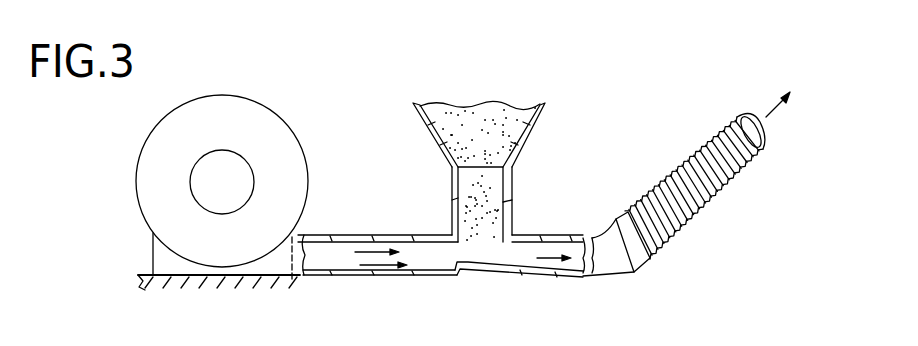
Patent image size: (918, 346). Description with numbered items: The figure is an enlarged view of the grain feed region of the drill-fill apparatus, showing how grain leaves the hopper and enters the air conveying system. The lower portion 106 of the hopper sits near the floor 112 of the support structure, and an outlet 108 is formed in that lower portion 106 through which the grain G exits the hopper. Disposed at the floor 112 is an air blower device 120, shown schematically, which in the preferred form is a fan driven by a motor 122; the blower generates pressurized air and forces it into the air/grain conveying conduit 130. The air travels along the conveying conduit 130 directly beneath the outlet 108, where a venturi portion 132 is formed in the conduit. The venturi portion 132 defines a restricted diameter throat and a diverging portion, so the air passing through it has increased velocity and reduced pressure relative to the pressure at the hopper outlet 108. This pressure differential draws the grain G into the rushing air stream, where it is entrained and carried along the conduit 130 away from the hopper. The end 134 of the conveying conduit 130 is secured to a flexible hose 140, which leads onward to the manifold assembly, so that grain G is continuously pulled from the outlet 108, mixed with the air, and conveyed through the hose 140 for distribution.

The lower portion 106 is at (502, 140).
The outlet 108 is at (483, 190).
The floor 112 is at (160, 279).
The air blower device 120 is at (293, 177).
The motor 122 is at (242, 170).
The air/grain conveying conduit 130 is at (345, 257).
The venturi portion 132 is at (463, 250).
The end 134 is at (615, 257).
The flexible hose 140 is at (735, 190).
The grain G is at (462, 122).